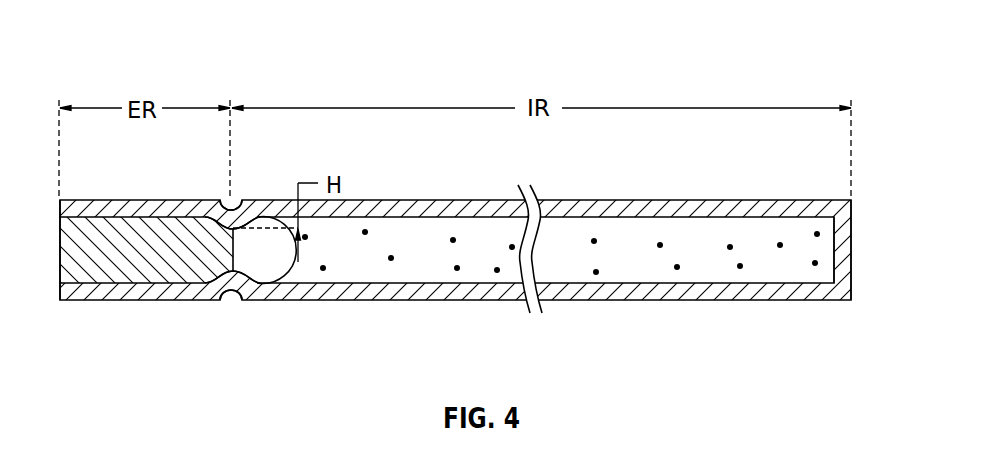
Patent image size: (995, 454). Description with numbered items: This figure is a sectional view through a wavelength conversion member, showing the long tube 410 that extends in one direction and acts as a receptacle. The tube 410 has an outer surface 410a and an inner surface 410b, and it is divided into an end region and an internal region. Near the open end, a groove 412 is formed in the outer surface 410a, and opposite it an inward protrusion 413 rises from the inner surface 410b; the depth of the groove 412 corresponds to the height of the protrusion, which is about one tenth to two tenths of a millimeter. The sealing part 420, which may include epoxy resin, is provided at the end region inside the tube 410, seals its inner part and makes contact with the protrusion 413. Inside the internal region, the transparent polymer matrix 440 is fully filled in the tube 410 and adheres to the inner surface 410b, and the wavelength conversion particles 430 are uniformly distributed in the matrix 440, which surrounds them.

The tube 410 is at (472, 292).
The outer surface of tube 410a is at (650, 302).
The inner surface of tube 410b is at (697, 280).
The groove 412 is at (230, 203).
The inward protrusion of tube wall 413 is at (253, 216).
The sealing part 420 is at (153, 263).
The wavelength conversion particles 430 is at (389, 262).
The matrix 440 is at (307, 266).